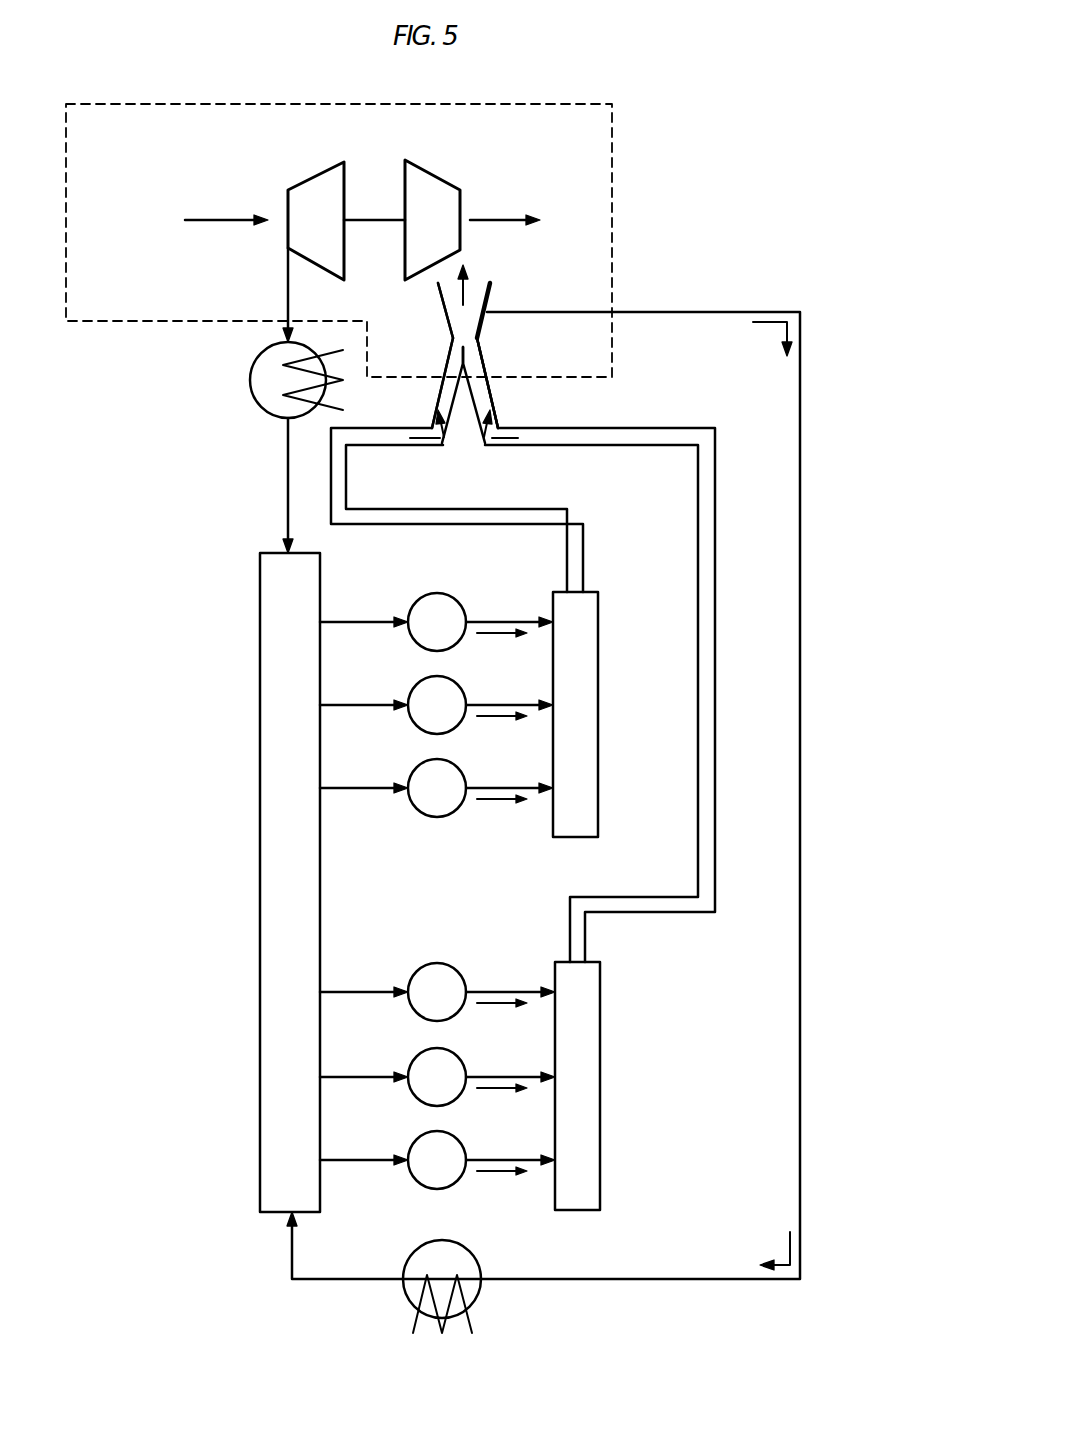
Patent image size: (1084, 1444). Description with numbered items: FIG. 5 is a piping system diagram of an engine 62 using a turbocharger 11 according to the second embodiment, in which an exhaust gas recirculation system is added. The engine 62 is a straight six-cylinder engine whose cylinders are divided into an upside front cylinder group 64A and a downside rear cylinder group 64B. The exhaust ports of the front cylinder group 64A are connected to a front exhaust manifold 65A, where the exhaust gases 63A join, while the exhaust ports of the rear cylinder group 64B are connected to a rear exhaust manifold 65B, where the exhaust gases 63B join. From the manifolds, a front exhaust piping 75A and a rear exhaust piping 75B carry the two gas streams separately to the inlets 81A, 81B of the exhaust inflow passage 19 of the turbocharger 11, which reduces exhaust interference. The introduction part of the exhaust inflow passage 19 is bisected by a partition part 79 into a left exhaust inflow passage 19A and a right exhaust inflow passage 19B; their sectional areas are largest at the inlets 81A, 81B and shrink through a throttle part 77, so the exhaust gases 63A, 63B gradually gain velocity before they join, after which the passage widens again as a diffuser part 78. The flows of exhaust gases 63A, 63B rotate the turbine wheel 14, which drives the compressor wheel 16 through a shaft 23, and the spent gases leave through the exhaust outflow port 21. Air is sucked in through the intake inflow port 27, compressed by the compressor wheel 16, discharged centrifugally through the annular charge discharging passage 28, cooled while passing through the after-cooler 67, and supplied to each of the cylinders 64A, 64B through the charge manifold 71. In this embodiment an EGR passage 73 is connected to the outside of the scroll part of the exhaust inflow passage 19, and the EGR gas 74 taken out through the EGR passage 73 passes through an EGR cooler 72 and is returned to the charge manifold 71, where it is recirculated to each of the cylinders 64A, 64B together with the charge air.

The turbocharger 11 is at (612, 208).
The turbine wheel 14 is at (432, 172).
The compressor wheel 16 is at (320, 176).
The exhaust inflow passage 19 is at (470, 292).
The left exhaust inflow passage 19A is at (451, 345).
The right exhaust inflow passage 19B is at (474, 368).
The exhaust outflow port 21 is at (497, 218).
The shaft 23 is at (370, 218).
The intake inflow port 27 is at (215, 218).
The charge discharging passage 28 is at (286, 283).
The engine 62 is at (693, 138).
The exhaust gas 63A is at (466, 294).
The exhaust gas 63B is at (505, 441).
The front cylinder group 64A is at (417, 601).
The rear cylinder group 64B is at (417, 971).
The front exhaust manifold 65A is at (600, 762).
The rear exhaust manifold 65B is at (600, 1132).
The after-cooler 67 is at (250, 363).
The charge manifold 71 is at (322, 1205).
The EGR cooler 72 is at (478, 1290).
The EGR passage 73 is at (803, 692).
The EGR gas 74 is at (802, 326).
The front exhaust piping 75A is at (528, 509).
The rear exhaust piping 75B is at (716, 520).
The throttle part 77 is at (464, 347).
The diffuser part 78 is at (442, 305).
The partition part 79 is at (470, 358).
The inlet 81A is at (450, 380).
The inlet 81B is at (480, 386).